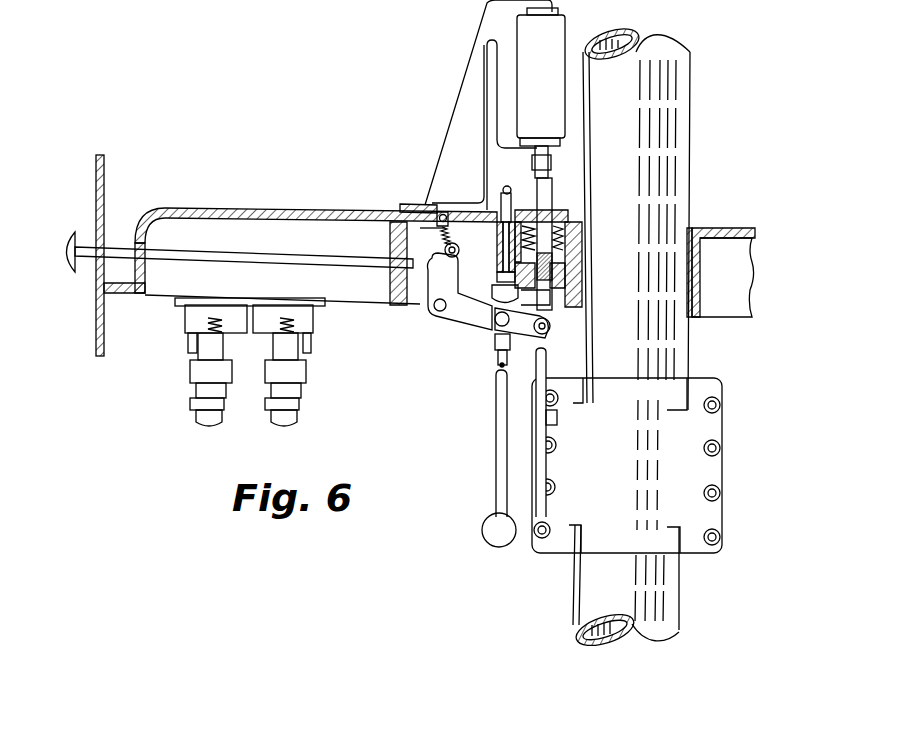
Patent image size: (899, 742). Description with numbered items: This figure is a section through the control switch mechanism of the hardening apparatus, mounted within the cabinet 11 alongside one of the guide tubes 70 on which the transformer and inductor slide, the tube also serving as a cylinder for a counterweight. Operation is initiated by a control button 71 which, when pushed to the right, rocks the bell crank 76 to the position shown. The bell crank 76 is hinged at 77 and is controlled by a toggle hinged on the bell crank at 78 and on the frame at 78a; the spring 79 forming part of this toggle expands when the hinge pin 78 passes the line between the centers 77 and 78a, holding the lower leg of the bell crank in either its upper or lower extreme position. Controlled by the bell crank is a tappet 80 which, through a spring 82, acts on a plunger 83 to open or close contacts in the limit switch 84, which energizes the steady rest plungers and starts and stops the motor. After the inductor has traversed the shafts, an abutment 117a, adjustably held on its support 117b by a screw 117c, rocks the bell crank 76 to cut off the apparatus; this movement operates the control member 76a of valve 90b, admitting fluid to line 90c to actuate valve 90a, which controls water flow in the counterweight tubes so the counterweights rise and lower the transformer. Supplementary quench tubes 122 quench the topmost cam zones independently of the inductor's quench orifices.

The cabinet 11 is at (104, 182).
The control button 71 is at (63, 240).
The supplementary quench tubes 122 is at (190, 322).
The limit switch 84 is at (541, 93).
The plunger 83 is at (552, 190).
The spring 82 is at (572, 260).
The valve 90b is at (497, 292).
The toggle hinge on frame 78a is at (443, 212).
The spring 79 is at (449, 238).
The toggle hinge pin 78 is at (460, 250).
The hinge 77 is at (438, 312).
The bell crank 76 is at (468, 329).
The tappet 80 is at (550, 322).
The control member 76a is at (500, 331).
The line 90c is at (496, 440).
The valve 90a is at (483, 521).
The guide tube 70 is at (574, 594).
The abutment 117a is at (535, 372).
The support 117b is at (547, 467).
The screw 117c is at (557, 420).